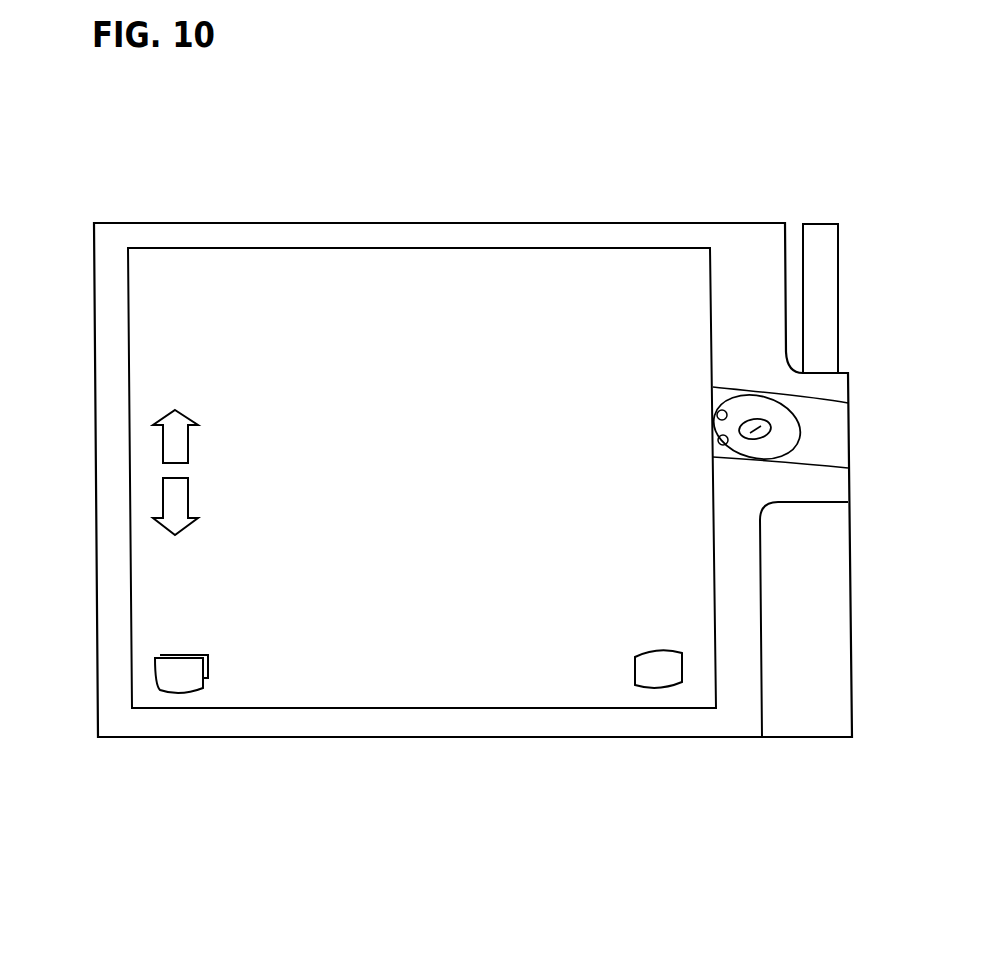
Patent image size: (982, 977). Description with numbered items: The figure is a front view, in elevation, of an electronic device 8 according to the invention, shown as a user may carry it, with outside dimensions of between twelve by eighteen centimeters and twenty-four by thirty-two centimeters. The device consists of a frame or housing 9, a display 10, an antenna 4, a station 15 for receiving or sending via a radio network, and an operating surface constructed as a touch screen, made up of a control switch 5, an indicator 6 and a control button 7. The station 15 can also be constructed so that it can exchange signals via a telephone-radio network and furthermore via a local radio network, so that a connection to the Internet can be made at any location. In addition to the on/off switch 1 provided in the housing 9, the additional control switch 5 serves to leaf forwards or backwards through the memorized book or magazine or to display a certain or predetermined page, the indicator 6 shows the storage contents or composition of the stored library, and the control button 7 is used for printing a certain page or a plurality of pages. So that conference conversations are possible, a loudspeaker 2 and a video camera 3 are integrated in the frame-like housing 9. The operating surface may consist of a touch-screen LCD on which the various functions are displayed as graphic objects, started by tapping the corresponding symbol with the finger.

The on/off switch 1 is at (771, 428).
The loudspeaker 2 is at (727, 413).
The video camera 3 is at (727, 443).
The antenna 4 is at (820, 237).
The control switch 5 is at (173, 500).
The indicator 6 is at (177, 680).
The control button 7 is at (663, 675).
The electronic device 8 is at (318, 192).
The housing 9 is at (260, 240).
The display 10 is at (508, 388).
The station 15 is at (800, 619).